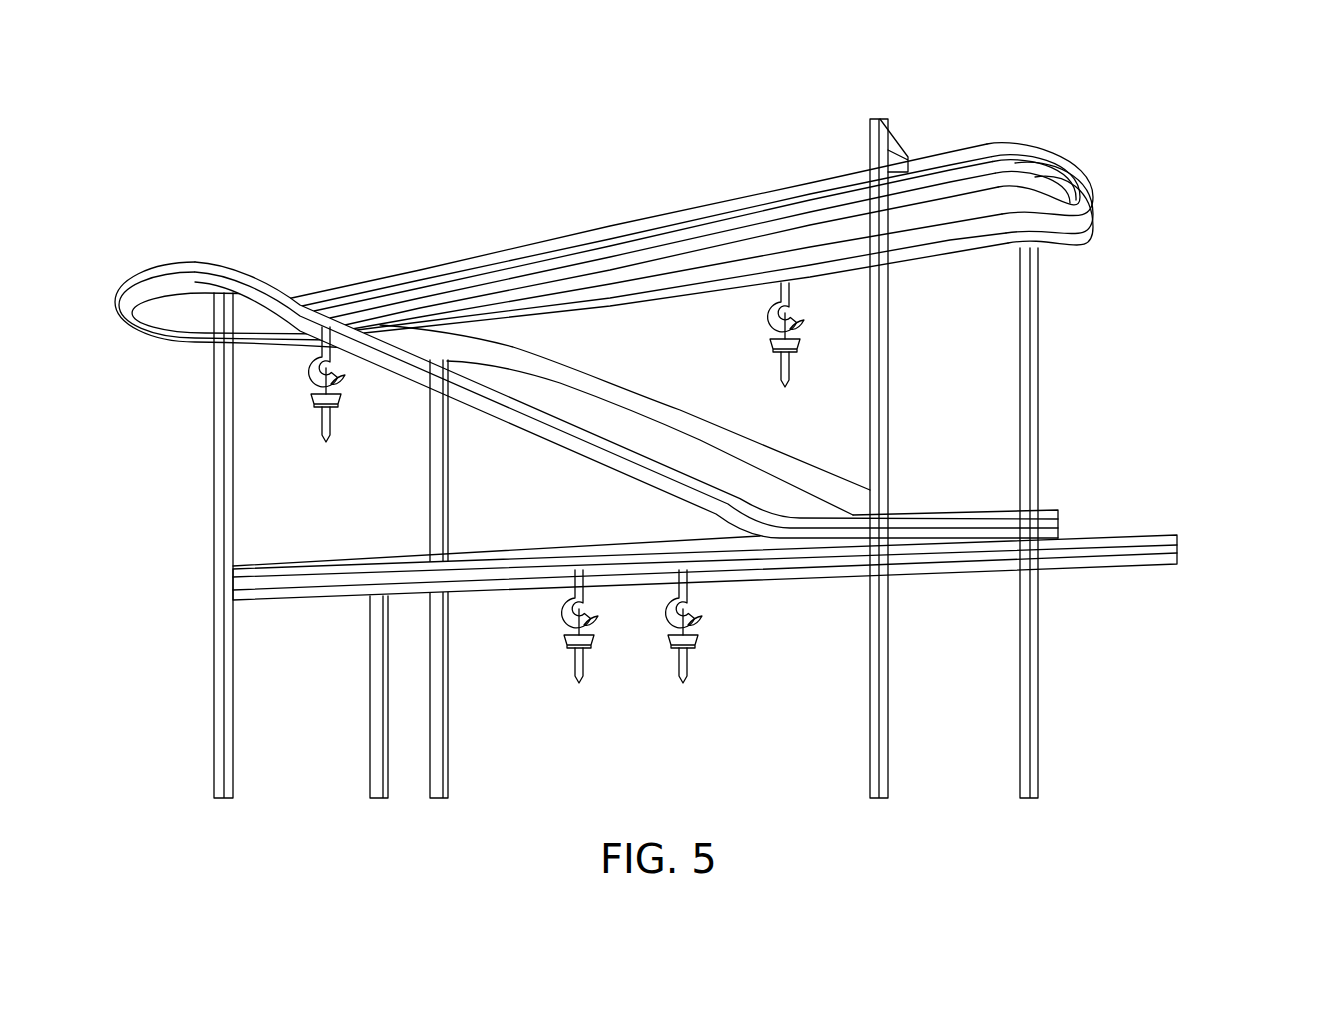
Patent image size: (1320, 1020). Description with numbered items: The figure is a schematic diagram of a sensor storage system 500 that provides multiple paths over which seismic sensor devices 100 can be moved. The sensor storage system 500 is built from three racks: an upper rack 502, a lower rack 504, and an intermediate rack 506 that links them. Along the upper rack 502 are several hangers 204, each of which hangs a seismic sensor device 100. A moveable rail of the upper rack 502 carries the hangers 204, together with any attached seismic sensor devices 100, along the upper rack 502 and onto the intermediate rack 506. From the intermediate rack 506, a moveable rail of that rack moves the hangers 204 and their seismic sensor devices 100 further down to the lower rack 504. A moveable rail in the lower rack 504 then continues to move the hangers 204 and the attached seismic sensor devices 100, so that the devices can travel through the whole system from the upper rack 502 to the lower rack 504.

The sensor storage system 500 is at (1188, 98).
The upper rack 502 is at (1063, 146).
The lower rack 504 is at (313, 598).
The intermediate rack 506 is at (813, 455).
The hanger 204 is at (313, 383).
The seismic sensor device 100 is at (347, 432).